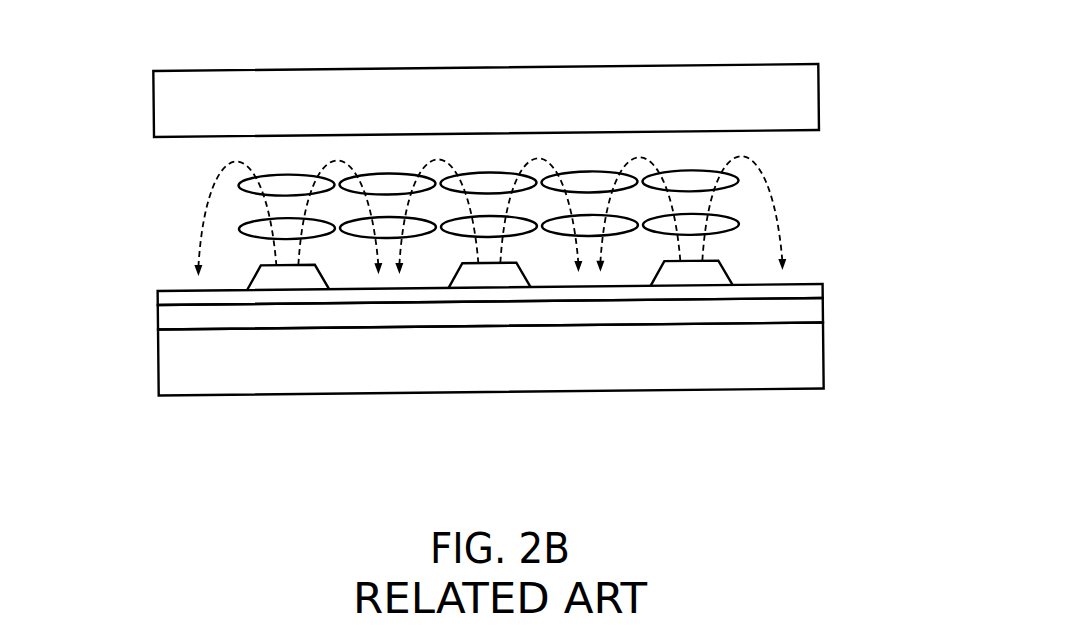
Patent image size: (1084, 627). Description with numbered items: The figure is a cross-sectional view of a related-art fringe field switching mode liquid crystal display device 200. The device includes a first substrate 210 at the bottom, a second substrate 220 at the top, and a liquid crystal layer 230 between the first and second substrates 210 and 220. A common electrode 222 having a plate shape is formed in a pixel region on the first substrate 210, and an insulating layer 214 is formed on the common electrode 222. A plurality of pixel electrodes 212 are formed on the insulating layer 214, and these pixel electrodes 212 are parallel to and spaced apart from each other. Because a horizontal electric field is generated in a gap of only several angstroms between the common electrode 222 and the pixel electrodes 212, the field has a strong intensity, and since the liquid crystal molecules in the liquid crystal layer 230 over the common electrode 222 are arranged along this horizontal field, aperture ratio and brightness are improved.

The light rays 200 is at (203, 202).
The first substrate 210 is at (803, 370).
The pixel electrodes 212 is at (290, 282).
The insulating layer 214 is at (821, 292).
The second substrate 220 is at (802, 111).
The common electrode 222 is at (821, 308).
The liquid crystal layer 230 is at (832, 130).